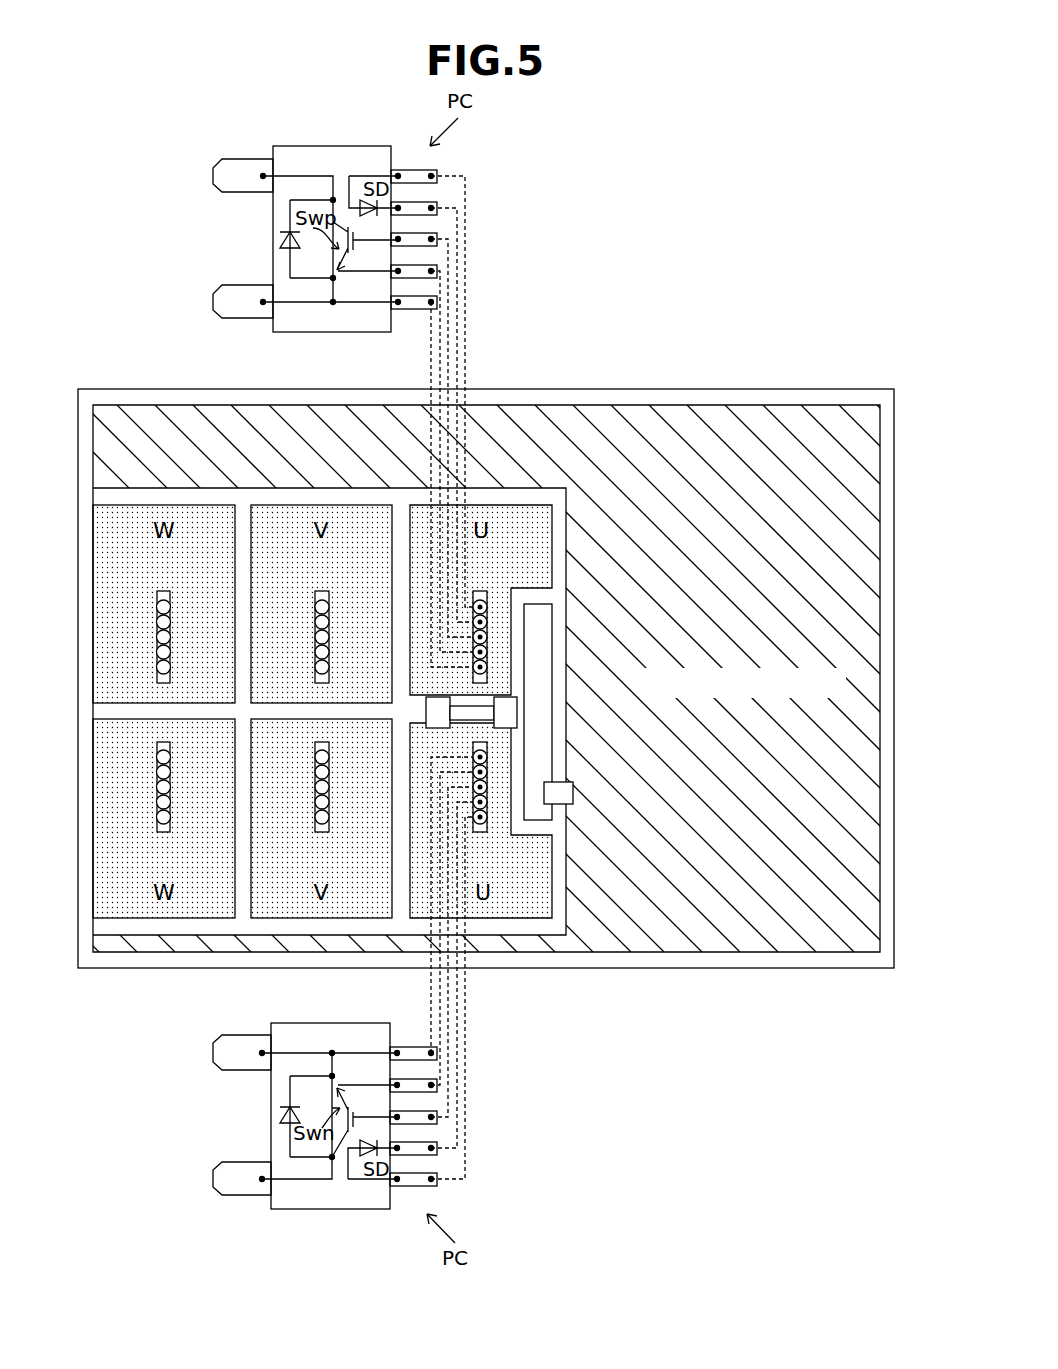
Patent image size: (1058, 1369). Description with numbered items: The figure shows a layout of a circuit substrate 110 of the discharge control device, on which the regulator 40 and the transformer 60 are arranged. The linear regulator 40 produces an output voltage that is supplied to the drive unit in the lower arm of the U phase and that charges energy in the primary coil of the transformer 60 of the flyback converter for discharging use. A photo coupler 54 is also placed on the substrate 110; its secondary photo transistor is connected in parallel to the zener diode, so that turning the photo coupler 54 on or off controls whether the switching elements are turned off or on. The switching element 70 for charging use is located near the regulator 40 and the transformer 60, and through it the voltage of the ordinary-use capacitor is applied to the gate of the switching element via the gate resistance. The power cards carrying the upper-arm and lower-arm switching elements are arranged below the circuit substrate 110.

The control board 110 is at (737, 390).
The linear regulator 40 is at (543, 660).
The photo coupler 54 is at (573, 805).
The transformer 60 is at (517, 713).
The switching element for charging use 70 is at (437, 729).